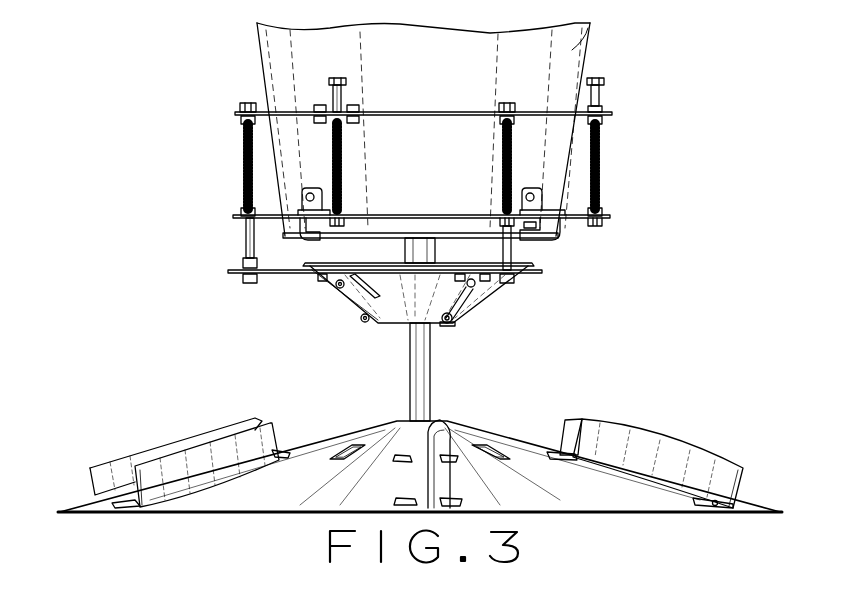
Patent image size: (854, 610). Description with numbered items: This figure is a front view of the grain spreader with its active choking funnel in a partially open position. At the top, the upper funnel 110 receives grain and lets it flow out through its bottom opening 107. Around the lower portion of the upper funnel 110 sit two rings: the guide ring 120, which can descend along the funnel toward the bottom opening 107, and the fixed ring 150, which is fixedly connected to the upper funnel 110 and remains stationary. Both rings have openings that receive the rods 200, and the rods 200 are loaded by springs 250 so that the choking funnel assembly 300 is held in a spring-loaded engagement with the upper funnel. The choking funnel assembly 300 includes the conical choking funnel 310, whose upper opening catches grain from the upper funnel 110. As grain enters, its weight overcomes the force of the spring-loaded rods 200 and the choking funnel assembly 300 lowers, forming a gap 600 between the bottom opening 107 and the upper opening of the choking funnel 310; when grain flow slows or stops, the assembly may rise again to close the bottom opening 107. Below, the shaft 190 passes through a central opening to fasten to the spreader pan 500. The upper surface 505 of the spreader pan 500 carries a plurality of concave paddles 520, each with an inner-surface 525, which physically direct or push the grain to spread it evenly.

The upper funnel 110 is at (575, 52).
The guide ring 120 is at (293, 110).
The rods 200 is at (337, 80).
The springs 250 is at (245, 162).
The fixed ring 150 is at (577, 220).
The bottom opening 107 is at (537, 240).
The gap 600 is at (325, 248).
The choking funnel assembly 300 is at (423, 308).
The choking funnel 310 is at (350, 298).
The shaft 190 is at (433, 378).
The spreader pan 500 is at (423, 458).
The upper surface 505 is at (613, 490).
The inner-surface 525 is at (202, 450).
The paddles 520 is at (745, 479).